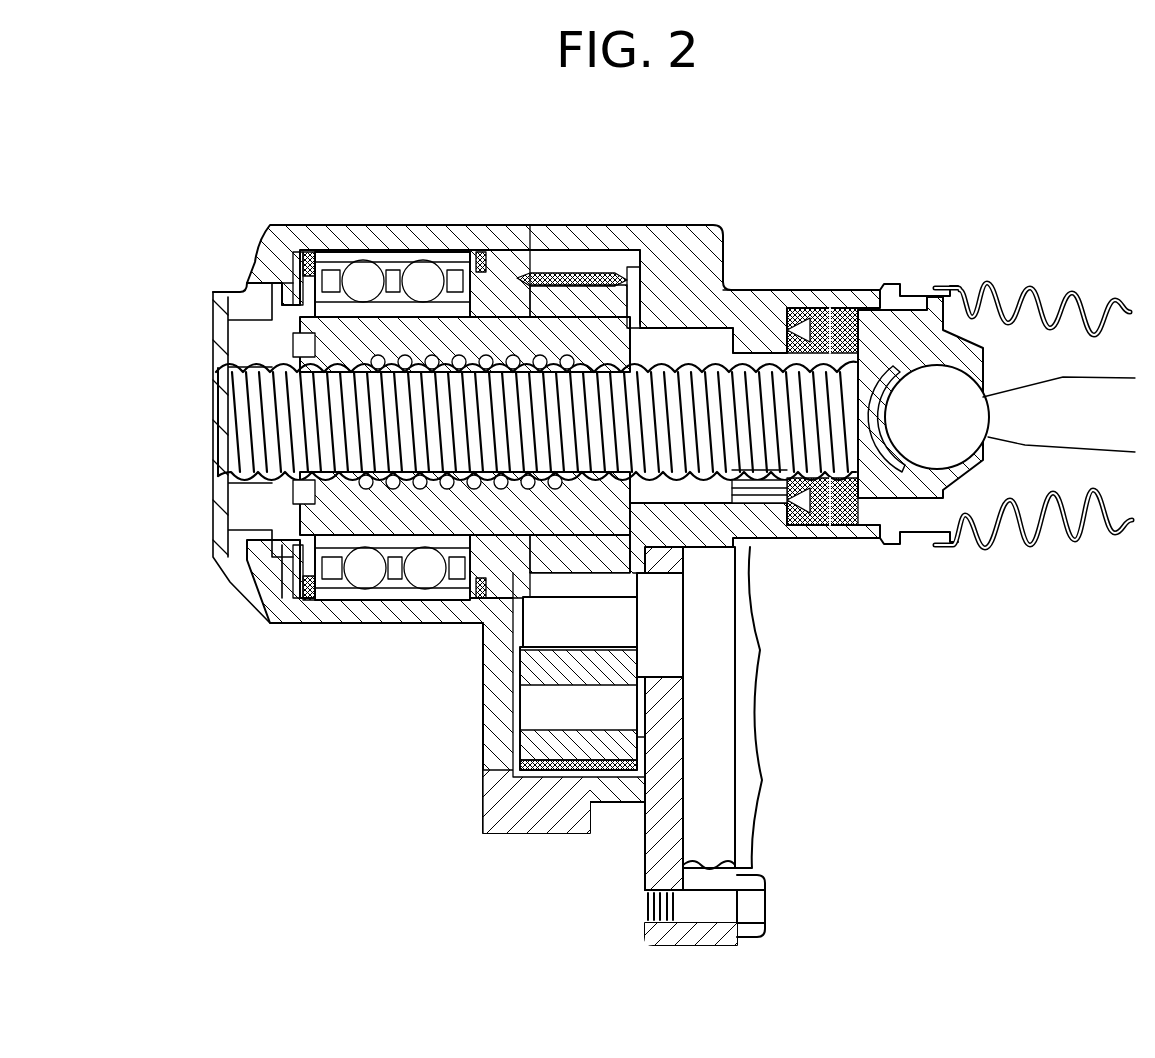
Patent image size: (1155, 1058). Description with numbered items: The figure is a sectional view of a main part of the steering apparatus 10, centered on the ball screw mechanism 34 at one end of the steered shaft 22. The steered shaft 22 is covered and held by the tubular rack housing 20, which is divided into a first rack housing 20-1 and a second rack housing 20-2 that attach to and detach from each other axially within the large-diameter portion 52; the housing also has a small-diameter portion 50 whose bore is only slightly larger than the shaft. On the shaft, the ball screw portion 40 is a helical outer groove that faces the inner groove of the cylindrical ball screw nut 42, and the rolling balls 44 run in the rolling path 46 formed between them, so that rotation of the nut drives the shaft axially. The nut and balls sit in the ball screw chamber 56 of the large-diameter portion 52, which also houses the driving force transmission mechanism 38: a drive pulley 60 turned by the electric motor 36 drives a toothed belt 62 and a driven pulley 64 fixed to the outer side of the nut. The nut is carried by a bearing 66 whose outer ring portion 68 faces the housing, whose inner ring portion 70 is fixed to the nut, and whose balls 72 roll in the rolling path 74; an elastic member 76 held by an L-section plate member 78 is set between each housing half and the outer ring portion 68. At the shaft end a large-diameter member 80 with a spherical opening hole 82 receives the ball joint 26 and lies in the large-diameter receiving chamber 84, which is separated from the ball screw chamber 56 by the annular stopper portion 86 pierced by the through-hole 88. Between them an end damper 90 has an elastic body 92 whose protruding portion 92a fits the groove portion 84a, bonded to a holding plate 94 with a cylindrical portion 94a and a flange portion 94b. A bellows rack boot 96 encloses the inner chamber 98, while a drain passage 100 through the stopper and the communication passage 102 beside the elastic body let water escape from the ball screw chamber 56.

The steering apparatus 10 is at (770, 232).
The rack housing 20 is at (550, 350).
The first rack housing 20-1 is at (560, 225).
The second rack housing 20-2 is at (485, 225).
The steered shaft 22 is at (270, 410).
The ball joint 26 is at (950, 395).
The ball screw mechanism 34 is at (258, 492).
The electric motor 36 is at (713, 817).
The driving force transmission mechanism 38 is at (517, 640).
The ball screw portion 40 is at (700, 265).
The ball screw nut 42 is at (320, 328).
The rolling balls 44 is at (665, 265).
The rolling path 46 is at (340, 362).
The small-diameter portion 50 is at (785, 320).
The large-diameter portion 52 is at (655, 230).
The ball screw chamber 56 is at (700, 570).
The drive pulley 60 is at (520, 745).
The belt 62 is at (570, 635).
The driven pulley 64 is at (580, 270).
The bearing 66 is at (367, 489).
The outer ring portion 68 is at (372, 610).
The inner ring portion 70 is at (340, 600).
The balls 72 is at (360, 590).
The rolling path 74 is at (400, 660).
The elastic member 76 is at (313, 250).
The plate member 78 is at (300, 250).
The large-diameter member 80 is at (905, 310).
The opening hole 82 is at (960, 458).
The large-diameter receiving chamber 84 is at (895, 363).
The groove portion 84a is at (832, 290).
The stopper portion 86 is at (770, 292).
The through-hole 88 is at (740, 345).
The end damper 90 is at (876, 478).
The elastic body 92 is at (838, 454).
The protruding portion 92a is at (835, 312).
The holding plate 94 is at (898, 485).
The cylindrical portion 94a is at (865, 530).
The flange portion 94b is at (840, 530).
The rack boot 96 is at (1038, 543).
The inner chamber 98 is at (988, 513).
The drain passage 100 is at (764, 505).
The communication passage 102 is at (778, 520).